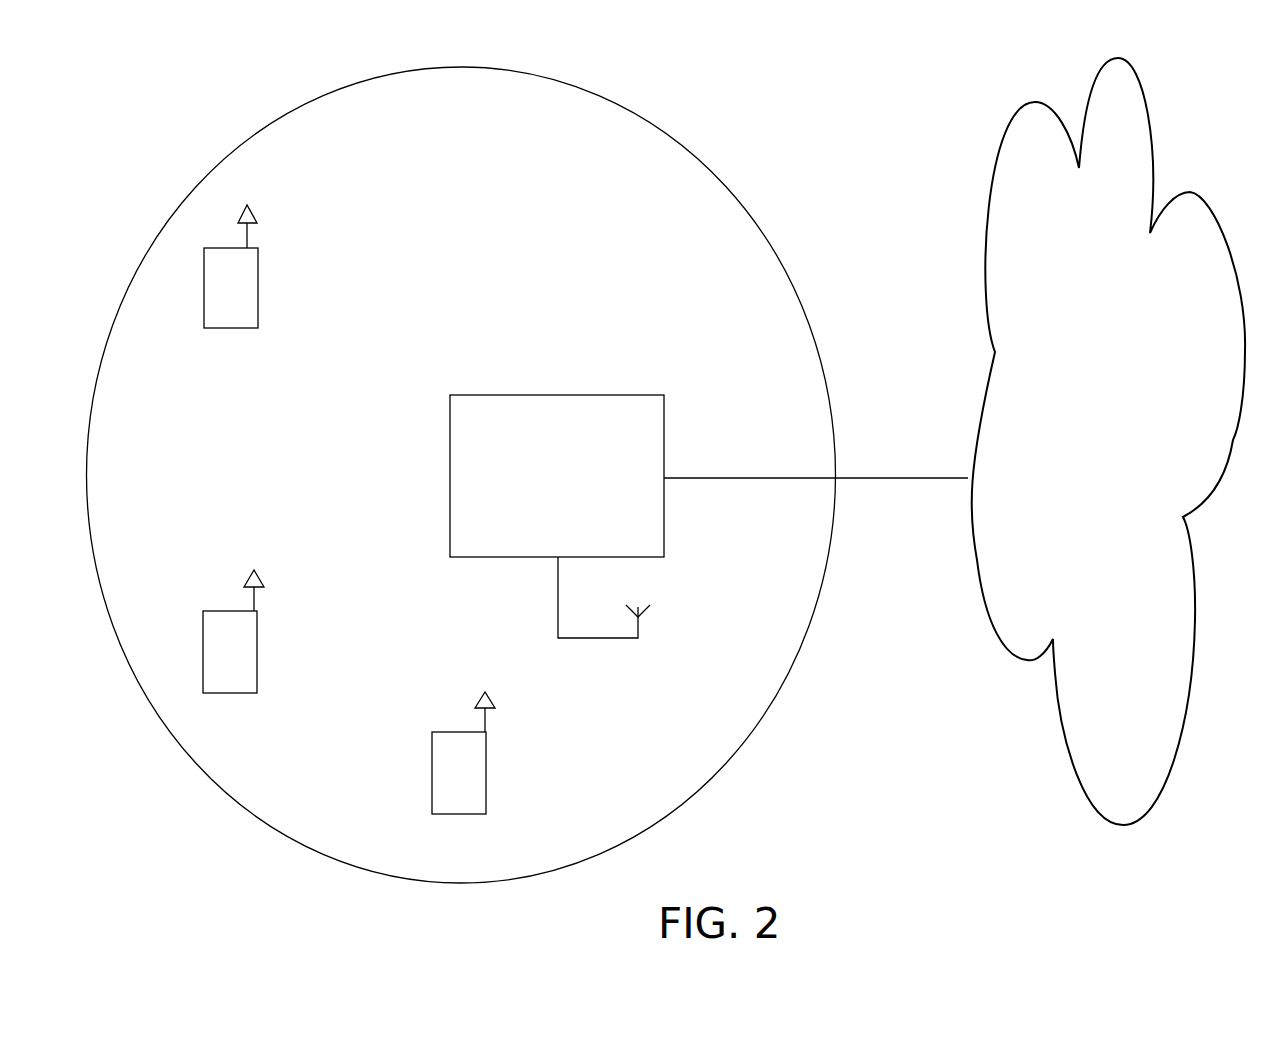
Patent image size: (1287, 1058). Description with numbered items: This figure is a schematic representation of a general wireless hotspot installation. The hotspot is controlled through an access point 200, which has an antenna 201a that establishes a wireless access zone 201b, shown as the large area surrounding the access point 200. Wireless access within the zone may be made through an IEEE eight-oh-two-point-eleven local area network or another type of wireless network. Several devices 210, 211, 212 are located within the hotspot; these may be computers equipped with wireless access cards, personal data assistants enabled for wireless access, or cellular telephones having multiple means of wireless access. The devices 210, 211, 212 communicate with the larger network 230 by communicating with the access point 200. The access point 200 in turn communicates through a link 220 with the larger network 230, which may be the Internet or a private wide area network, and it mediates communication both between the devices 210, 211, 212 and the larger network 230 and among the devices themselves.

The wireless access zone 201b is at (489, 117).
The access point 200 is at (647, 552).
The antenna 201a is at (558, 610).
The device 210 is at (258, 288).
The device 211 is at (257, 676).
The device 212 is at (486, 792).
The link 220 is at (906, 478).
The larger network 230 is at (1143, 692).